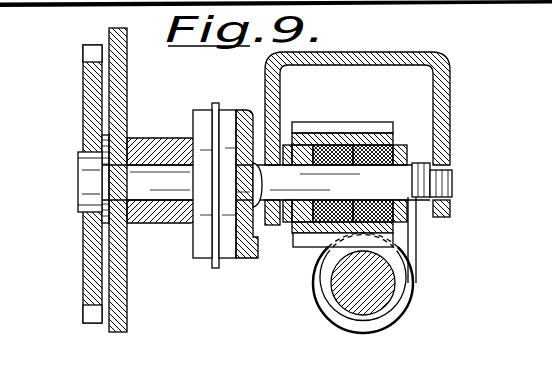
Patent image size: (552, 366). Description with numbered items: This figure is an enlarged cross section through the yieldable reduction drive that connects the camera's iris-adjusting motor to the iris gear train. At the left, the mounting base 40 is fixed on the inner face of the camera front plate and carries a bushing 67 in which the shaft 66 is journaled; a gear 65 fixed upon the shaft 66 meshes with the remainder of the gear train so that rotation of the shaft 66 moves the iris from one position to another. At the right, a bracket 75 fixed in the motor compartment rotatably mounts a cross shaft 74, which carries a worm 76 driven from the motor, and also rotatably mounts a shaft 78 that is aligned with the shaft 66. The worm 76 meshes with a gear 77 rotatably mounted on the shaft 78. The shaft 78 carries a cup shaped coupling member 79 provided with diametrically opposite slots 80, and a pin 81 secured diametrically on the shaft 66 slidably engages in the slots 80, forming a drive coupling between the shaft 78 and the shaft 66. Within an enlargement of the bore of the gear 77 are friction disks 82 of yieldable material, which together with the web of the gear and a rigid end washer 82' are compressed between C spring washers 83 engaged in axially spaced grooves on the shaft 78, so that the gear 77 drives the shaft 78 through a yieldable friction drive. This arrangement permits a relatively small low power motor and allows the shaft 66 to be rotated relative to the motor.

The mounting base 40 is at (127, 60).
The gear 65 is at (92, 107).
The shaft 66 is at (128, 170).
The bushing 67 is at (163, 140).
The cross shaft 74 is at (380, 278).
The bracket 75 is at (374, 53).
The worm 76 is at (400, 290).
The gear 77 is at (324, 238).
The shaft 78 is at (452, 178).
The cup shaped coupling member 79 is at (240, 110).
The slots 80 is at (213, 106).
The pin 81 is at (213, 233).
The friction disks 82 is at (343, 155).
The rigid end washer 82' is at (382, 158).
The C spring washers 83 is at (286, 160).